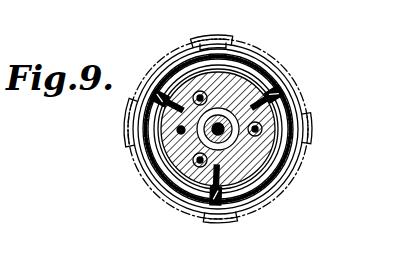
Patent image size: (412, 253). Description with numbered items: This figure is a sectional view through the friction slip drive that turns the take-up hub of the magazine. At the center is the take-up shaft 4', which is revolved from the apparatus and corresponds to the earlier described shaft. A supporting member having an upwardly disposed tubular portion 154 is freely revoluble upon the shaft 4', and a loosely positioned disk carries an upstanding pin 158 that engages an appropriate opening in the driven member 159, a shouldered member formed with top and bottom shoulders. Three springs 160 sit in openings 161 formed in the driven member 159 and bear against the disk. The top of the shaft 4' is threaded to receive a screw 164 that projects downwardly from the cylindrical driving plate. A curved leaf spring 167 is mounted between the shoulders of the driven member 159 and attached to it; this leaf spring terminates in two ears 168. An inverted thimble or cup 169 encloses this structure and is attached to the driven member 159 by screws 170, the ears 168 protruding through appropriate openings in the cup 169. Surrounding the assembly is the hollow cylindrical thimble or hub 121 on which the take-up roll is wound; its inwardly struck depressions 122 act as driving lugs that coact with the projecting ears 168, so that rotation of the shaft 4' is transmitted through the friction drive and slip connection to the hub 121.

The take-up shaft 4' is at (253, 94).
The hollow cylindrical thimble or hub 121 is at (298, 177).
The inwardly struck depressions 122 is at (229, 38).
The upwardly disposed tubular portion 154 is at (150, 157).
The upstanding pin 158 is at (140, 130).
The driven member 159 is at (293, 180).
The springs 160 is at (180, 70).
The openings 161 is at (188, 56).
The screw 164 is at (288, 107).
The curved leaf spring 167 is at (210, 45).
The ears 168 is at (252, 62).
The inverted thimble or cup 169 is at (301, 157).
The screws 170 is at (138, 91).